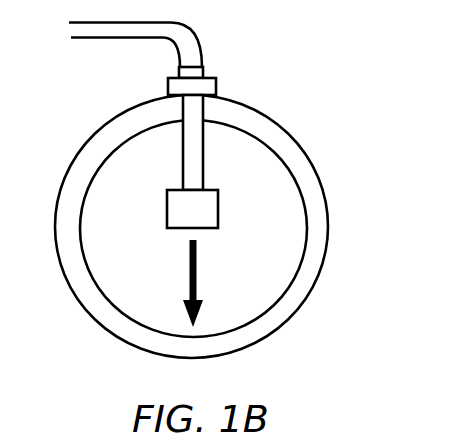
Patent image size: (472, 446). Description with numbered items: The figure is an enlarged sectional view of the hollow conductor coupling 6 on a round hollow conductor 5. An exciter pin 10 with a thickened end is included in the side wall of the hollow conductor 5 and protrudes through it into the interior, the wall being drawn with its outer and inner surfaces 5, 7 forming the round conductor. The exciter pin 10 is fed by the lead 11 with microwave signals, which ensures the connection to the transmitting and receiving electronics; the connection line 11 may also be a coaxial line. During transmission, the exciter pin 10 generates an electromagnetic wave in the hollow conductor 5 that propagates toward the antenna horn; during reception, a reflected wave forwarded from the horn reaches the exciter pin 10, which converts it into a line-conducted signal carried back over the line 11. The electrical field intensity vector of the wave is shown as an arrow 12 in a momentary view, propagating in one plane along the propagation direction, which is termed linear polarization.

The hollow conductor 5 is at (308, 187).
The container inner wall 7 is at (258, 168).
The hollow conductor coupling 6 is at (218, 70).
The exciter pin 10 is at (200, 195).
The lead 11 is at (118, 34).
The arrow 12 is at (203, 270).